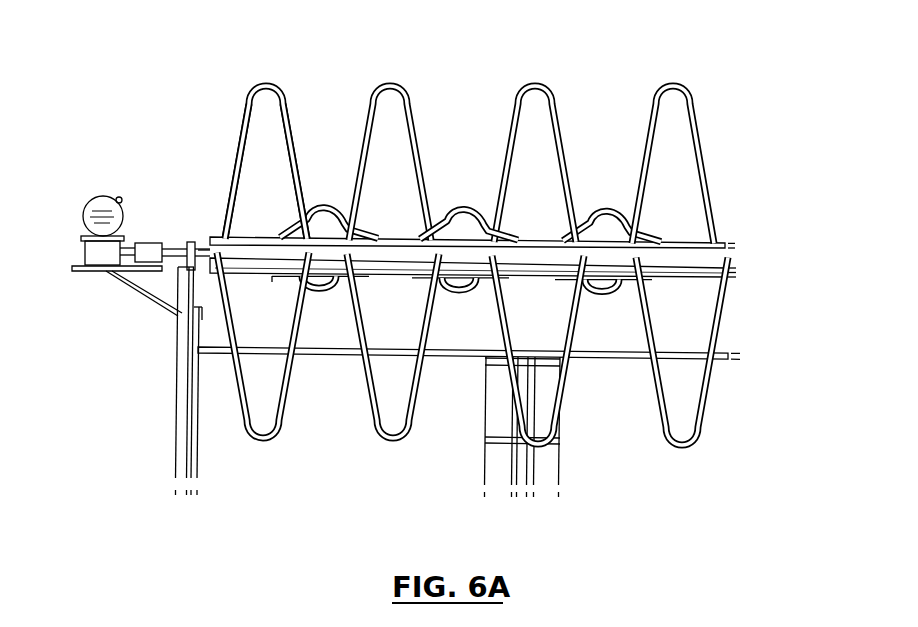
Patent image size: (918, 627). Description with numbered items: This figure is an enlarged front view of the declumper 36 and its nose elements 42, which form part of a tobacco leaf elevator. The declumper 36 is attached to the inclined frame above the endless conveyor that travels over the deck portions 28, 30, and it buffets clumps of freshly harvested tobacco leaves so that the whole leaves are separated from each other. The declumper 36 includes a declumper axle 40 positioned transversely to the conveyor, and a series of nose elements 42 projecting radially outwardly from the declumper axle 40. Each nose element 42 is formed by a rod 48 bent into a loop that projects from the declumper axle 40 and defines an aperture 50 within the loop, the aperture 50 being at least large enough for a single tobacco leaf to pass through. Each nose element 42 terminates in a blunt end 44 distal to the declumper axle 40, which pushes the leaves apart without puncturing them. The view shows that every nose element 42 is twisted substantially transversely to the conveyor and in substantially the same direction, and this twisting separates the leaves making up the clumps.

The deck portion 28 is at (333, 474).
The deck portion 30 is at (641, 480).
The declumper 36 is at (190, 215).
The declumper axle 40 is at (719, 243).
The nose element 42 is at (458, 237).
The blunt end 44 is at (371, 135).
The rod 48 is at (292, 108).
The aperture 50 is at (287, 172).